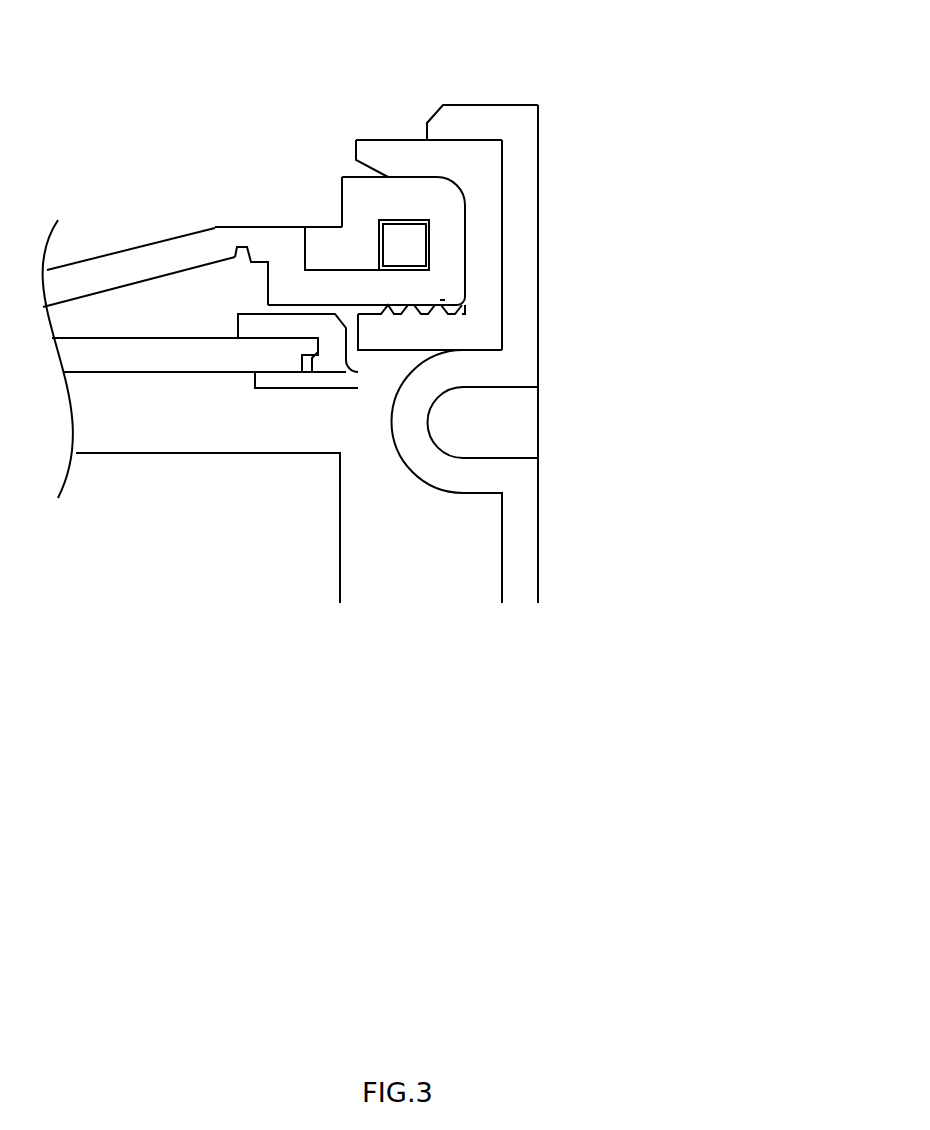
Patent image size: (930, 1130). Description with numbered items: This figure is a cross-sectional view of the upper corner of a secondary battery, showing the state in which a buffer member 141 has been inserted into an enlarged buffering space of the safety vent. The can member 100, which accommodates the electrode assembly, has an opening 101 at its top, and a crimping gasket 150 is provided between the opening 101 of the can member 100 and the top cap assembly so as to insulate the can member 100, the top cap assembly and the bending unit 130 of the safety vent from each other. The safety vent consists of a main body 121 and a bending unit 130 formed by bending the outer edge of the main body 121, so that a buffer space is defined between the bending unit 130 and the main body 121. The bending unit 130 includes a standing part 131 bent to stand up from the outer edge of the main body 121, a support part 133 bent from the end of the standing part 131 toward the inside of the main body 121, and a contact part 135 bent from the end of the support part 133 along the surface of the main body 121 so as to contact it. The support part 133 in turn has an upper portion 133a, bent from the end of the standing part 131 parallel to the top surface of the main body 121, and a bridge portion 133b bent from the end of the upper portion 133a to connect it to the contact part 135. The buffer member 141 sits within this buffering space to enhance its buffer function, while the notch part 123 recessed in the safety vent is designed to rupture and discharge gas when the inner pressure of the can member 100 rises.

The can member 100 is at (520, 537).
The opening 101 is at (427, 125).
The main body 121 is at (333, 292).
The notch part 123 is at (235, 250).
The bending unit 130 is at (562, 218).
The standing part 131 is at (447, 255).
The support part 133 is at (510, 236).
The upper portion 133a is at (407, 198).
The bridge portion 133b is at (358, 220).
The contact part 135 is at (328, 237).
The buffer member 141 is at (413, 258).
The crimping gasket 150 is at (482, 327).